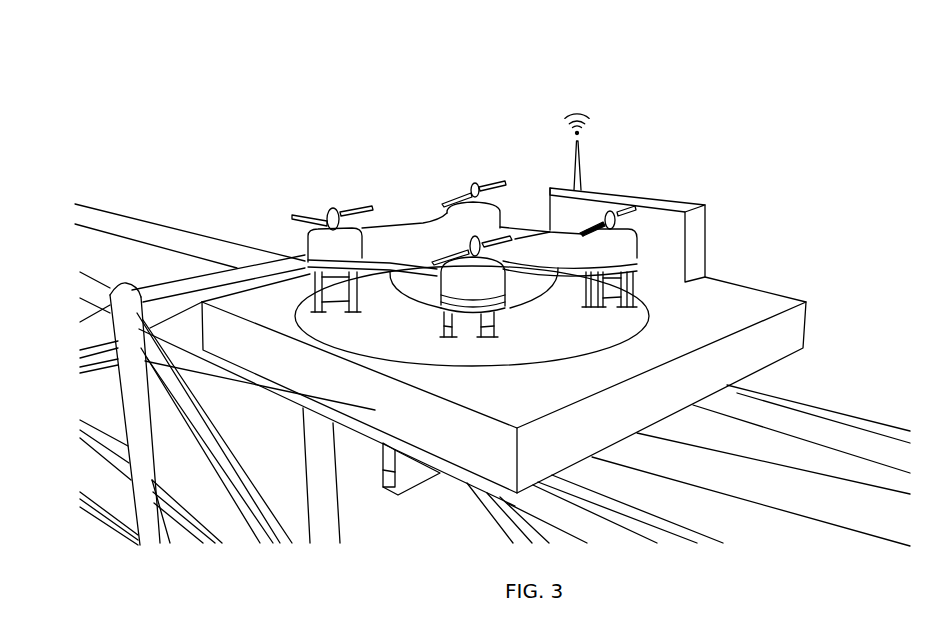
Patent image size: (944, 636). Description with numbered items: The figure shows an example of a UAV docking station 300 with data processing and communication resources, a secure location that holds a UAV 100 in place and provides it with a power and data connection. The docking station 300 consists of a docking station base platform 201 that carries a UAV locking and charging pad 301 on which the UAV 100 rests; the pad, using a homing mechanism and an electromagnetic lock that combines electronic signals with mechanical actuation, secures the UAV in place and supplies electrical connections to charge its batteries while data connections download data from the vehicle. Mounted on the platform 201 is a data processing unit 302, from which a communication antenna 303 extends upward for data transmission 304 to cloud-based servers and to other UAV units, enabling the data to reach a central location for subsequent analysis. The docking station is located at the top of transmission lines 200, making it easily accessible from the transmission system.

The UAV docking station 300 is at (199, 80).
The unmanned aerial vehicle (drone) 100 is at (317, 222).
The transmission lines 200 is at (824, 407).
The docking station base platform 201 is at (811, 304).
The UAV locking and charging pad 301 is at (652, 322).
The data processing unit 302 is at (707, 237).
The communication antenna 303 is at (583, 166).
The data transmission 304 is at (594, 117).